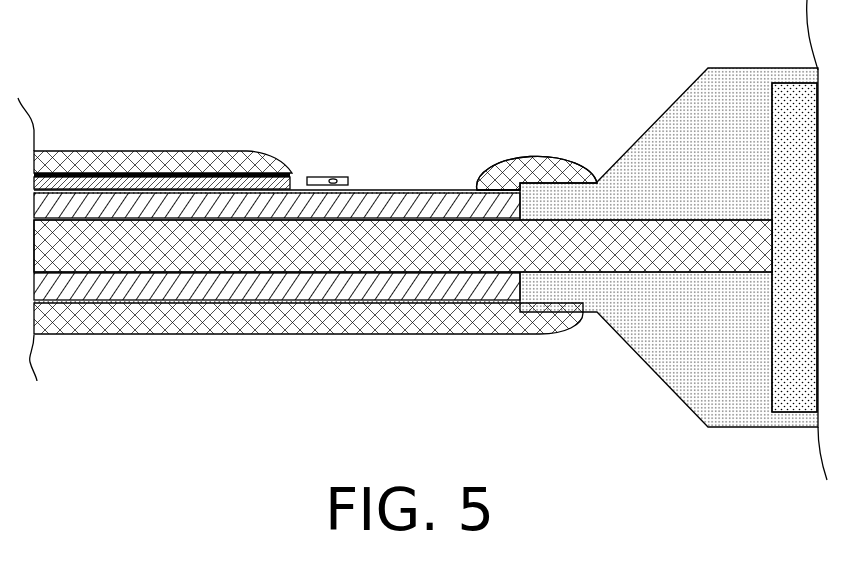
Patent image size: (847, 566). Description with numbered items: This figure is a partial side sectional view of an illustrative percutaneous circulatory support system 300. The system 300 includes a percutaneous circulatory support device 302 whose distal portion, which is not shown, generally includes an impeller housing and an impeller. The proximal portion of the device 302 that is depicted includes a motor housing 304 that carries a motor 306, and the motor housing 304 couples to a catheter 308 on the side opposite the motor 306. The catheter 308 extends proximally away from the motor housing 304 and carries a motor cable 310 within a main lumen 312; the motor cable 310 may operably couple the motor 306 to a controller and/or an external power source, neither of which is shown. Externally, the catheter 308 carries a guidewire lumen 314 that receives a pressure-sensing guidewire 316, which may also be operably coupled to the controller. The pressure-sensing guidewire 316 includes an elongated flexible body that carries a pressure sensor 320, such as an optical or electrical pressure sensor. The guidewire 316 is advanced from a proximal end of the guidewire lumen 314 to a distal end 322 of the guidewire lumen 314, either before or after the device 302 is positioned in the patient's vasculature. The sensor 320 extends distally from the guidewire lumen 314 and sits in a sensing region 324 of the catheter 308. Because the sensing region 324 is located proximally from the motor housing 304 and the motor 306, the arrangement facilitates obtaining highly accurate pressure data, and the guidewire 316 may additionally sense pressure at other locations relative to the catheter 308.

The percutaneous circulatory support system 300 is at (96, 96).
The percutaneous circulatory support device 302 is at (670, 107).
The motor housing 304 is at (627, 151).
The motor 306 is at (780, 83).
The catheter 308 is at (448, 190).
The motor cable 310 is at (235, 274).
The main lumen 312 is at (360, 275).
The guidewire lumen 314 is at (218, 172).
The pressure-sensing guidewire 316 is at (328, 177).
The pressure sensor 320 is at (336, 179).
The distal end of the guidewire lumen 322 is at (290, 173).
The sensing region 324 is at (399, 128).